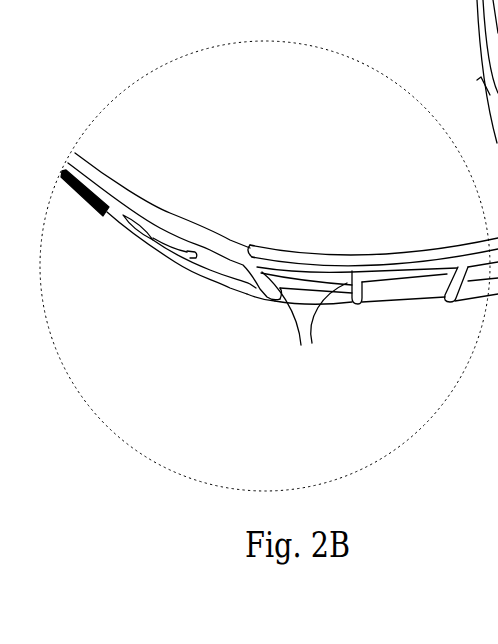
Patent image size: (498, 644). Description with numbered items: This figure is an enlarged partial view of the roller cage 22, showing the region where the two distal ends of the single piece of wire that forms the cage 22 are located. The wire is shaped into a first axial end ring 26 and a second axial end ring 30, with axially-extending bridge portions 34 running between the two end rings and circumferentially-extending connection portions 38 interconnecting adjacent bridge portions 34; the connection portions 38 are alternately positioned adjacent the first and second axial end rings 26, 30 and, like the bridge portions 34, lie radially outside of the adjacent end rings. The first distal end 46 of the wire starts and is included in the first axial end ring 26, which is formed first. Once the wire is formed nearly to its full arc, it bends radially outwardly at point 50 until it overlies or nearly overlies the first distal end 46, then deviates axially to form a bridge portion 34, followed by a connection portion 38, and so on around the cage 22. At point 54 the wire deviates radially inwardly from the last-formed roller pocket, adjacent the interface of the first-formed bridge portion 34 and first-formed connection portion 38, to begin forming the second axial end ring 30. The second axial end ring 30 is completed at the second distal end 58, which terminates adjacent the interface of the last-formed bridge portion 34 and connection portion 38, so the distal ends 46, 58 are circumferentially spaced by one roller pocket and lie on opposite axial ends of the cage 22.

The cage 22 is at (407, 212).
The first axial end ring 26 is at (312, 258).
The second axial end ring 30 is at (390, 298).
The bridge portion 34 is at (304, 322).
The connection portion 38 is at (270, 297).
The first distal end 46 is at (252, 245).
The point 50 is at (210, 229).
The point 54 is at (243, 294).
The second distal end 58 is at (193, 252).